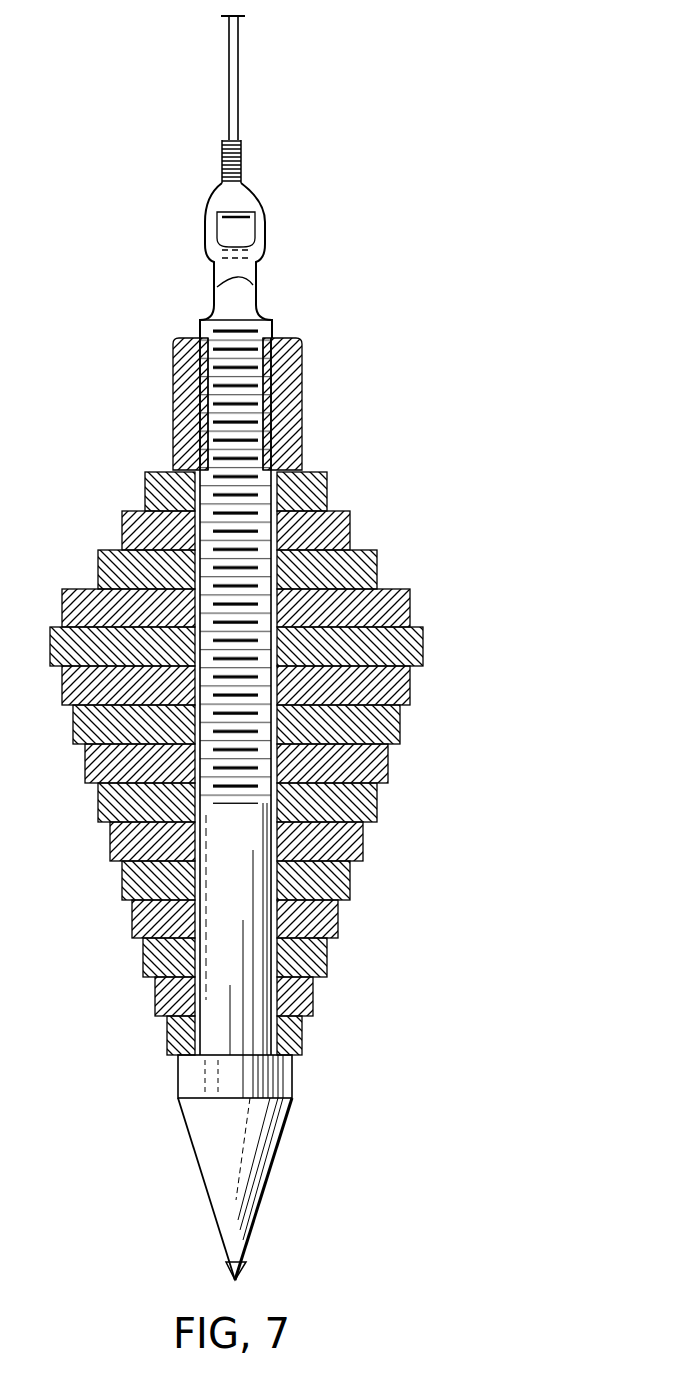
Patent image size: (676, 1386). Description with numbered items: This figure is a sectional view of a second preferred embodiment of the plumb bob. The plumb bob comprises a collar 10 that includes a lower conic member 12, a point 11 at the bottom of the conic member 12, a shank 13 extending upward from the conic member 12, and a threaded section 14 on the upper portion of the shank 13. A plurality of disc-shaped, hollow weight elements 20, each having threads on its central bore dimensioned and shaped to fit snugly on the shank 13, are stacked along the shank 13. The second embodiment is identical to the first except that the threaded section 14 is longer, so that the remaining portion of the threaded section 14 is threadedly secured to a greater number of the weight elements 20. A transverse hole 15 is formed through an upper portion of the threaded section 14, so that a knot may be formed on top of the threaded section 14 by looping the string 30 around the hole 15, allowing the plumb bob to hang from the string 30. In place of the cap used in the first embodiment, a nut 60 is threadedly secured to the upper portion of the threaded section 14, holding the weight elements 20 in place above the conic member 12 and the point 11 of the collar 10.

The string 30 is at (238, 67).
The transverse hole 15 is at (223, 280).
The nut 60 is at (302, 373).
The threaded section 14 is at (247, 512).
The weight elements 20 is at (423, 642).
The shank 13 is at (233, 877).
The conic member 12 is at (280, 1053).
The collar 10 is at (292, 1092).
The point 11 is at (247, 1265).